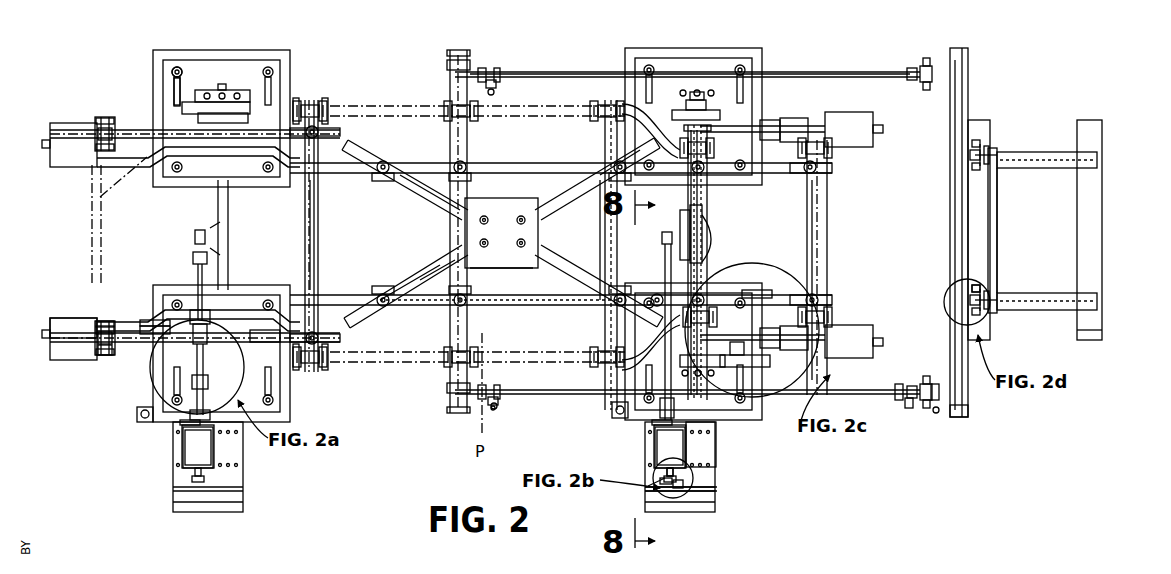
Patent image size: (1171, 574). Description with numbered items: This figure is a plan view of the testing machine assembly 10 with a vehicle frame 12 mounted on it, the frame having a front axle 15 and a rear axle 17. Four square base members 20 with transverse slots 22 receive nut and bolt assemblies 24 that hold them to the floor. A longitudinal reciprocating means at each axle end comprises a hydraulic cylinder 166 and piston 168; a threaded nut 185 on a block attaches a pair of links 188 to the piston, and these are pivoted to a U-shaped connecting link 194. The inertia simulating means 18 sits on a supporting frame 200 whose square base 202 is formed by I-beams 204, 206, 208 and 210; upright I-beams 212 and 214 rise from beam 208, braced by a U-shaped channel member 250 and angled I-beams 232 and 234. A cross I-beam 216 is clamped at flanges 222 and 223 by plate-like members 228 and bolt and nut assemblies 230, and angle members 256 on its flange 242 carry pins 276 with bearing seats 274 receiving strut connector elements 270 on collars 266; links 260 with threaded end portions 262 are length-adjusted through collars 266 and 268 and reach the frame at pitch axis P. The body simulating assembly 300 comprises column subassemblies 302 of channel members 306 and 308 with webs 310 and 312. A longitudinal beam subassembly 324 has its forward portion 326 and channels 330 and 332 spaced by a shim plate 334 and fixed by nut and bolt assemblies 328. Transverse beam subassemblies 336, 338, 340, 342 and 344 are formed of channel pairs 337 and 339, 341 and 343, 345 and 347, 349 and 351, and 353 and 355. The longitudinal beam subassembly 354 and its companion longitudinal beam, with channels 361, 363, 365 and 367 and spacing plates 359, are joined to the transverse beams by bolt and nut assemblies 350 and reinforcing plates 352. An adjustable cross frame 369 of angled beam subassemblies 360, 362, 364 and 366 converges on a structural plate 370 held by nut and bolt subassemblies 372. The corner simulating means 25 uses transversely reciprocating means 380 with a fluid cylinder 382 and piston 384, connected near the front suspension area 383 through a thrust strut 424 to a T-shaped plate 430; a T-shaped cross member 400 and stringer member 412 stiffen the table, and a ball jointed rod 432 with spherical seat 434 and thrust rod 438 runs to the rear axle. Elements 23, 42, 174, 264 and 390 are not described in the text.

The testing machine assembly 10 is at (428, 436).
The vehicle frame 12 is at (388, 373).
The front axle 15 is at (218, 202).
The rear axle 17 is at (690, 206).
The acceleration and deceleration inertia simulating means 18 is at (845, 62).
The base member 20 is at (262, 53).
The slot 22 is at (172, 90).
The clamp plate 23 is at (222, 90).
The nut and bolt assembly 24 is at (178, 67).
The corner simulating means 25 is at (715, 443).
The slide block 42 is at (190, 112).
The hydraulic cylinder 166 is at (866, 120).
The piston 168 is at (828, 112).
The coupling 174 is at (866, 110).
The threaded nut 185 is at (812, 122).
The link 188 is at (790, 118).
The connecting link 194 is at (755, 345).
The supporting frame 200 is at (1032, 328).
The base 202 is at (1104, 212).
The I-beam member 204 is at (1035, 310).
The I-beam member 206 is at (1033, 152).
The I-beam member 208 is at (978, 128).
The I-beam member 210 is at (1088, 340).
The I-beam 212 is at (988, 318).
The I-beam 214 is at (982, 152).
The cross I-beam 216 is at (955, 415).
The flange 222 is at (972, 300).
The flange 223 is at (972, 156).
The plate-like member 228 is at (955, 198).
The bolt and nut assembly 230 is at (968, 290).
The I-beam 232 is at (1028, 293).
The I-beam 234 is at (1040, 168).
The flange 242 is at (950, 226).
The U-shaped channel member 250 is at (997, 226).
The right angle shaped member 256 is at (484, 68).
The link 260 is at (795, 72).
The threaded end portion 262 is at (930, 400).
The nut 264 is at (490, 86).
The threaded collar 266 is at (912, 386).
The threaded collar 268 is at (496, 82).
The strut connector element 270 is at (940, 380).
The spherical bearing seat 274 is at (932, 384).
The pin 276 is at (928, 60).
The body simulating assembly 300 is at (500, 198).
The column subassembly 302 is at (90, 125).
The U-shaped channel member 306 is at (98, 345).
The U-shaped channel member 308 is at (50, 322).
The web 310 is at (102, 355).
The web 312 is at (115, 310).
The longitudinal beam subassembly 324 is at (125, 126).
The forward portion 326 is at (145, 328).
The nut and bolt assembly 328 is at (298, 98).
The U-shaped channel member 330 is at (280, 340).
The U-shaped channel member 332 is at (148, 340).
The shim plate 334 is at (318, 100).
The transverse beam subassembly 336 is at (320, 248).
The U-shaped channel member 337 is at (305, 238).
The transverse beam subassembly 338 is at (447, 241).
The U-shaped channel member 339 is at (318, 234).
The transverse beam subassembly 340 is at (625, 250).
The U-shaped channel member 341 is at (452, 148).
The transverse beam subassembly 342 is at (700, 278).
The U-shaped channel member 343 is at (468, 140).
The transverse beam subassembly 344 is at (830, 234).
The U-shaped channel member 345 is at (603, 236).
The U-shaped channel member 347 is at (617, 238).
The U-shaped channel member 349 is at (690, 192).
The bolt and nut assembly 350 is at (390, 160).
The U-shaped channel member 351 is at (707, 198).
The reinforcing plate 352 is at (376, 180).
The U-shaped channel member 353 is at (808, 198).
The longitudinal beam subassembly 354 is at (350, 298).
The U-shaped channel member 355 is at (828, 198).
The spacing plate 359 is at (320, 132).
The angularly disposed beam subassembly 360 is at (605, 308).
The U-shaped channel member 361 is at (528, 305).
The angularly disposed beam subassembly 362 is at (592, 173).
The U-shaped channel member 363 is at (522, 297).
The angularly disposed beam subassembly 364 is at (360, 154).
The U-shaped channel member 365 is at (585, 146).
The angularly disposed beam subassembly 366 is at (365, 316).
The U-shaped channel member 367 is at (545, 155).
The adjustable cross frame 369 is at (430, 206).
The structural plate 370 is at (501, 261).
The nut and bolt subassembly 372 is at (528, 221).
The transversely reciprocating means 380 is at (180, 446).
The fluid cylinder 382 is at (187, 453).
The front suspension area 383 is at (196, 230).
The piston 384 is at (180, 422).
The mounting block 390 is at (238, 453).
The T-shaped cross member 400 is at (717, 489).
The stringer member 412 is at (611, 408).
The thrust strut 424 is at (145, 388).
The T-shaped plate 430 is at (655, 478).
The ball jointed rod 432 is at (185, 288).
The spherical seat 434 is at (678, 498).
The thrust rod 438 is at (196, 276).